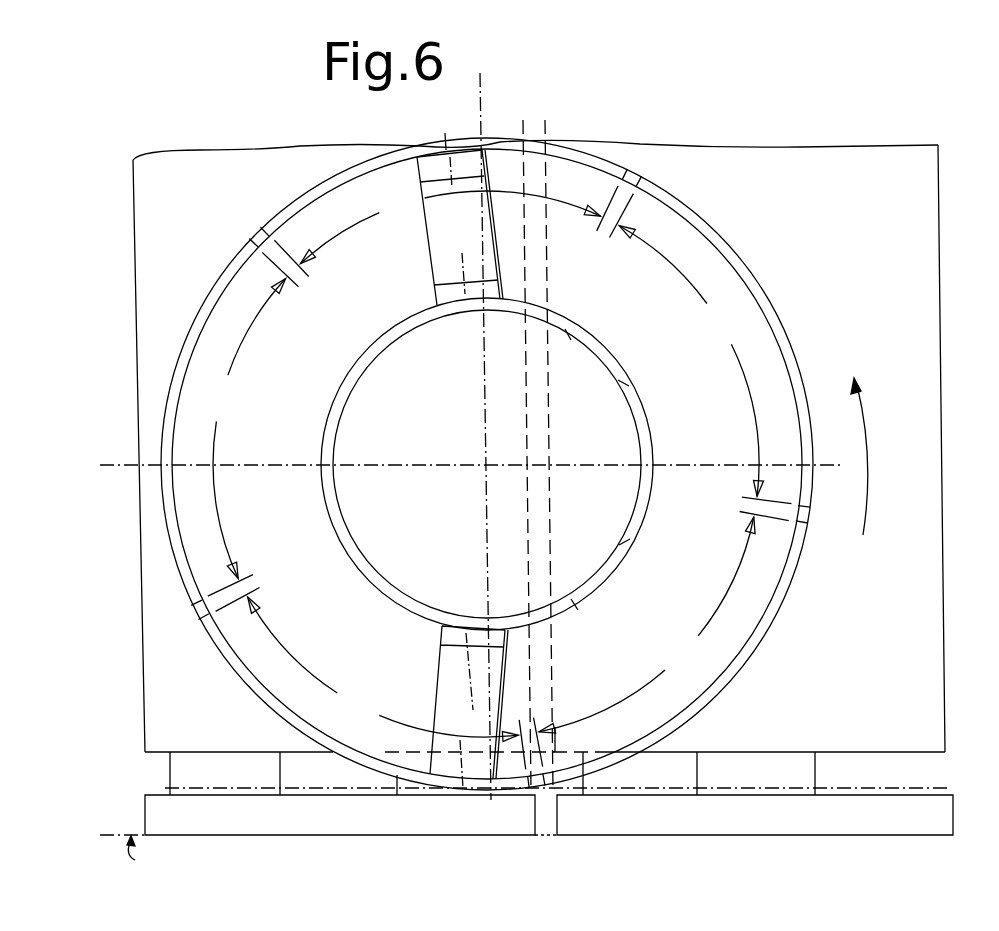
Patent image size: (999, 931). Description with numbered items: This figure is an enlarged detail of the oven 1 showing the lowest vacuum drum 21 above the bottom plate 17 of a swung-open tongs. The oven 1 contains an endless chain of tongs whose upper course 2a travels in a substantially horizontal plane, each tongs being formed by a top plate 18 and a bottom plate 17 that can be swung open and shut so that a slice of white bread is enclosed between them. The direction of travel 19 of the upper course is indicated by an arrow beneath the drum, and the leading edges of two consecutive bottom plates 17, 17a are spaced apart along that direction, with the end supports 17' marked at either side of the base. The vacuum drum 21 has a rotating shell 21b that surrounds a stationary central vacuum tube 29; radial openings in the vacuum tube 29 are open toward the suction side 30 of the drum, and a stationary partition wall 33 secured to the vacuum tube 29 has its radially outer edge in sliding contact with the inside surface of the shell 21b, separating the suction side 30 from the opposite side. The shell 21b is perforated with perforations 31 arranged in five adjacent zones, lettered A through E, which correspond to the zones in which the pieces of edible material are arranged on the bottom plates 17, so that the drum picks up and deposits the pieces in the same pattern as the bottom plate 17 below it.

The oven 1 is at (925, 456).
The upper course 2a is at (149, 858).
The bottom plate 17 is at (492, 800).
The bottom plate 17a is at (572, 825).
The end supports 17' is at (551, 781).
The top plate 18 is at (930, 246).
The direction of travel 19 is at (818, 847).
The vacuum drum 21 is at (783, 619).
The shell 21b is at (692, 208).
The vacuum tube 29 is at (320, 438).
The suction side 30 is at (572, 182).
The perforations 31 is at (600, 367).
The partition wall 33 is at (437, 231).